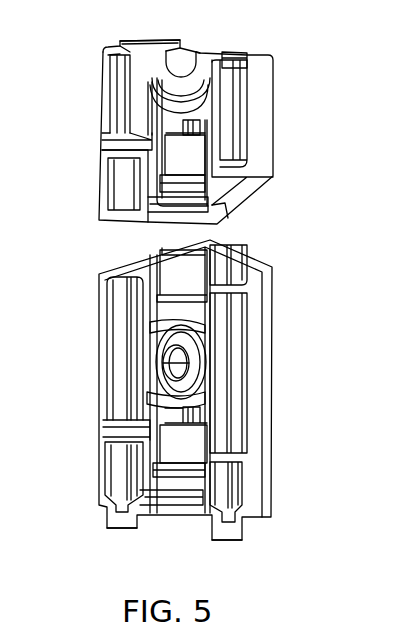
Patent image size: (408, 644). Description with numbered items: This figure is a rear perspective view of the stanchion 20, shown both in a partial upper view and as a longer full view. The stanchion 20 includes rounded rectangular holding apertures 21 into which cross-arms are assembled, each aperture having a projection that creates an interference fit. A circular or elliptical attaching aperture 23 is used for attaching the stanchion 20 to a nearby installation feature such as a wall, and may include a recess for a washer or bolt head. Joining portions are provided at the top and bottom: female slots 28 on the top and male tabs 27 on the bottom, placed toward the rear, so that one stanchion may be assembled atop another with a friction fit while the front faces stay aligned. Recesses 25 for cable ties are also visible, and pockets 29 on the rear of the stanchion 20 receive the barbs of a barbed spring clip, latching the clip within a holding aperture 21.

The stanchion 20 is at (102, 490).
The holding aperture 21 is at (183, 443).
The attaching aperture 23 is at (180, 367).
The recess for cable ties 25 is at (103, 432).
The male tab 27 is at (227, 540).
The female slot 28 is at (237, 62).
The pocket 29 is at (205, 127).